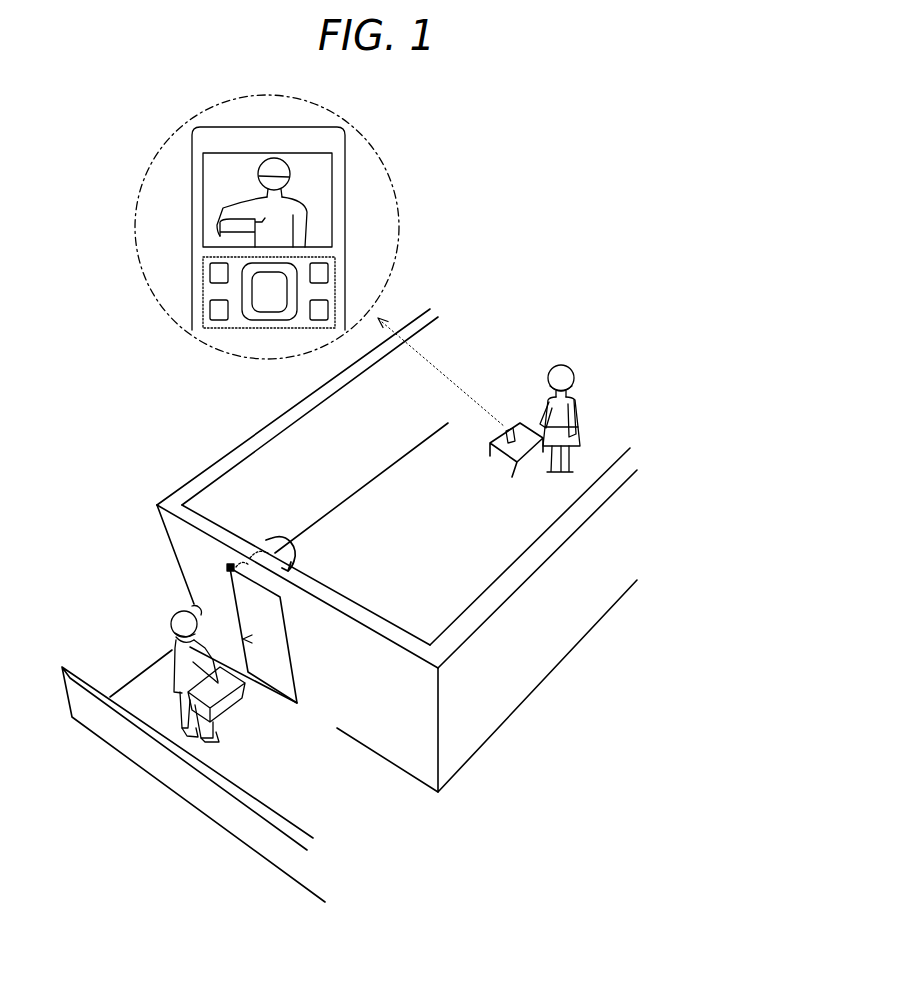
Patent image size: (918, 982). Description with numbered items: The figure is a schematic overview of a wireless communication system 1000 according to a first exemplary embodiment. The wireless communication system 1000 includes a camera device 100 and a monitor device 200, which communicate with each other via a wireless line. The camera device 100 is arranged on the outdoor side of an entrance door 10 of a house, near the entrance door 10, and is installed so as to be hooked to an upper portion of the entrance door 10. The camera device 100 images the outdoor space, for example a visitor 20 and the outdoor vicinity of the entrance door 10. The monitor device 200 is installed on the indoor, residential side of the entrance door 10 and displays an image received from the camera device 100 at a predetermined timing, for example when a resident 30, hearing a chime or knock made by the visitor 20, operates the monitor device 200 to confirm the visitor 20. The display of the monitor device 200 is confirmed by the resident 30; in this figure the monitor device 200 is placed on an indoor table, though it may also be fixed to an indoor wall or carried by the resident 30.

The wireless communication system 1000 is at (589, 226).
The entrance door 10 is at (282, 657).
The camera device 100 is at (229, 564).
The visitor 20 is at (185, 657).
The resident 30 is at (582, 412).
The monitor device 200 is at (507, 441).